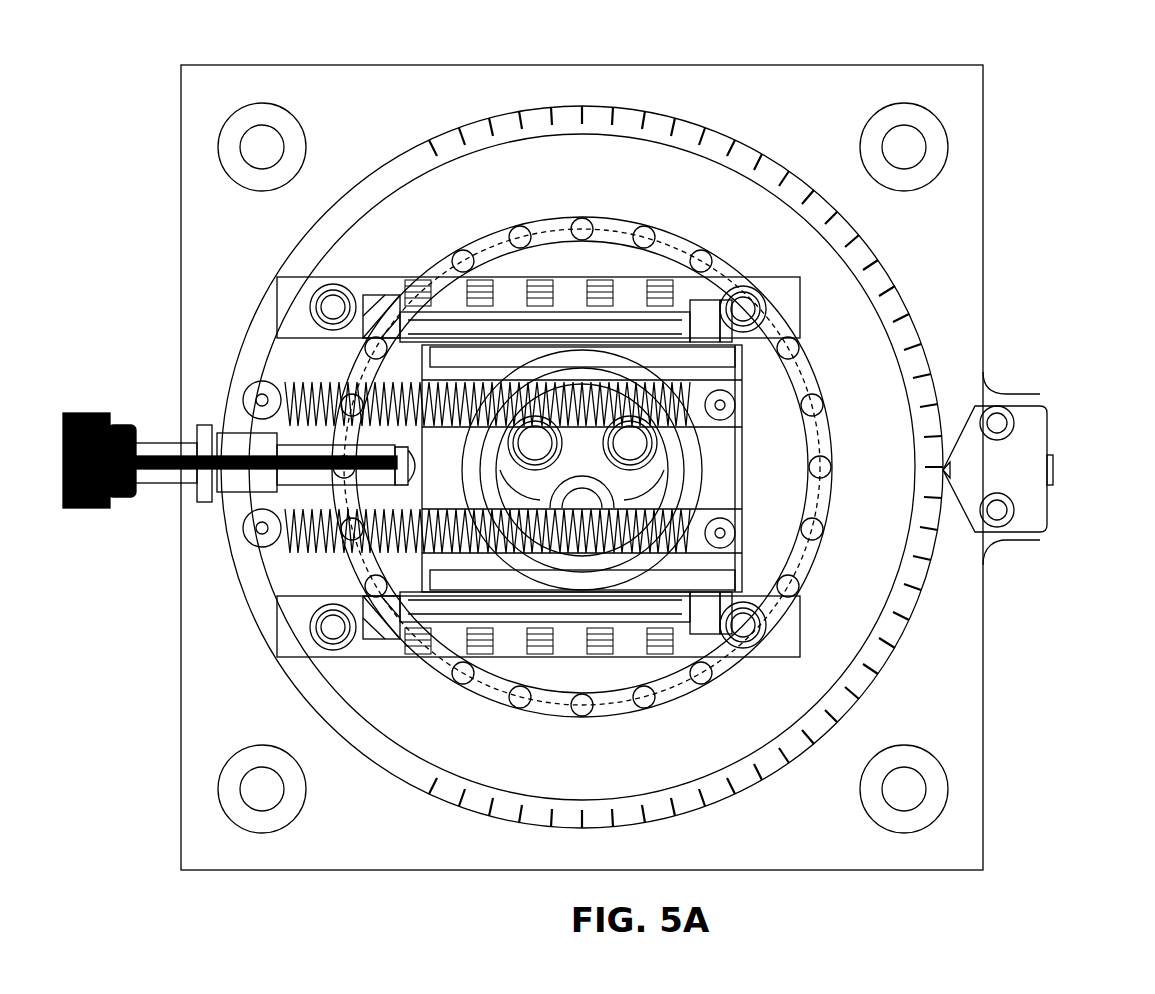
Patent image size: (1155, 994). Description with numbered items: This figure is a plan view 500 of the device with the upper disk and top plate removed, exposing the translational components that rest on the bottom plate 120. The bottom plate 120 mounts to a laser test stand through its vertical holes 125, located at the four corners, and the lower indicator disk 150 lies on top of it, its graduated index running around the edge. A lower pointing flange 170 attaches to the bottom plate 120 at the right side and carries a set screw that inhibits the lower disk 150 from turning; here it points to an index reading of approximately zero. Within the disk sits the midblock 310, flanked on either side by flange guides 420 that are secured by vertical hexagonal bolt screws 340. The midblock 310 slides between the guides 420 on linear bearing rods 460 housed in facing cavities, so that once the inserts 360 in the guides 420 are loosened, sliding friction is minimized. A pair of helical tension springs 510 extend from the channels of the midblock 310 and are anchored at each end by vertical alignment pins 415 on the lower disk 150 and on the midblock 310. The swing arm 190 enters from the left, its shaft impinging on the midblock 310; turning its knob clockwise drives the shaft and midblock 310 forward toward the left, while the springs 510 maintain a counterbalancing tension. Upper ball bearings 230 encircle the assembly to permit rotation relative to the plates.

The plan view 500 is at (1008, 104).
The bottom plate 120 is at (610, 467).
The vertical holes 125 is at (946, 768).
The lower indicator disk 150 is at (425, 902).
The inserts 360 is at (470, 252).
The upper ball bearings 230 is at (824, 400).
The vertical hexagonal bolt screw 340 is at (302, 300).
The flange guide 420 is at (305, 656).
The midblock 310 is at (744, 492).
The linear bearing rods 460 is at (710, 592).
The helical tension springs 510 is at (285, 550).
The vertical alignment pins 415 is at (250, 402).
The swing arm 190 is at (100, 509).
The lower pointing flange 170 is at (1050, 412).